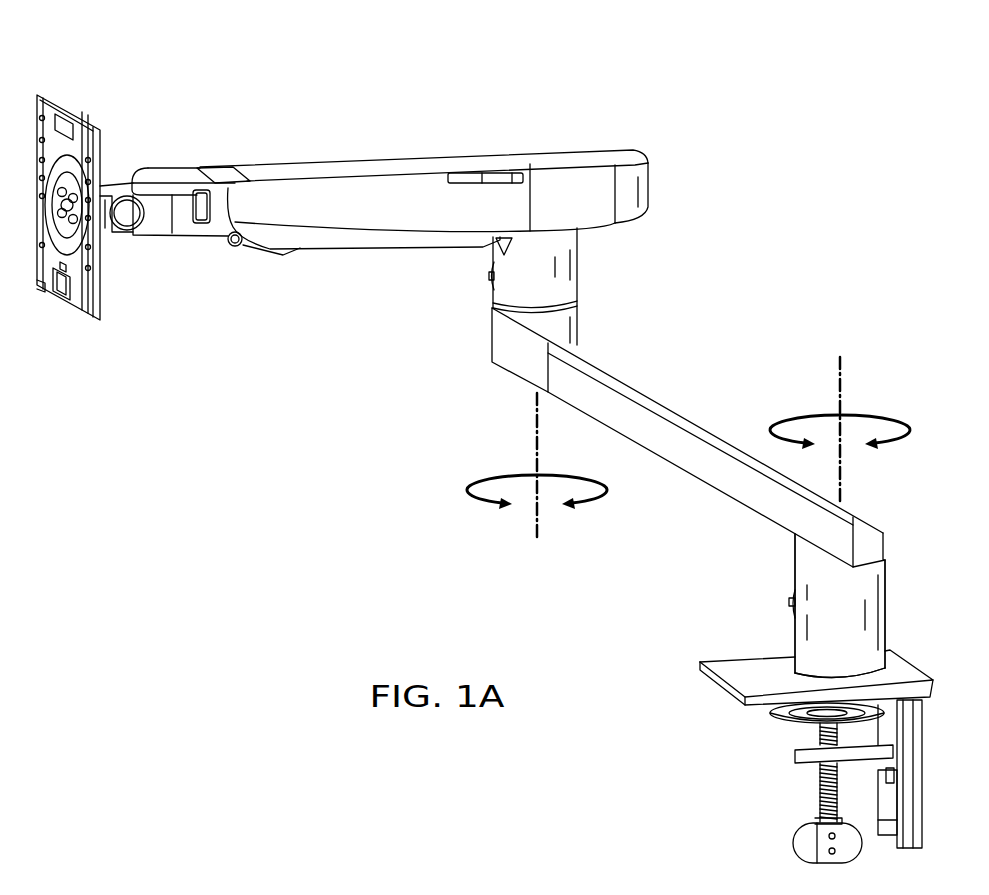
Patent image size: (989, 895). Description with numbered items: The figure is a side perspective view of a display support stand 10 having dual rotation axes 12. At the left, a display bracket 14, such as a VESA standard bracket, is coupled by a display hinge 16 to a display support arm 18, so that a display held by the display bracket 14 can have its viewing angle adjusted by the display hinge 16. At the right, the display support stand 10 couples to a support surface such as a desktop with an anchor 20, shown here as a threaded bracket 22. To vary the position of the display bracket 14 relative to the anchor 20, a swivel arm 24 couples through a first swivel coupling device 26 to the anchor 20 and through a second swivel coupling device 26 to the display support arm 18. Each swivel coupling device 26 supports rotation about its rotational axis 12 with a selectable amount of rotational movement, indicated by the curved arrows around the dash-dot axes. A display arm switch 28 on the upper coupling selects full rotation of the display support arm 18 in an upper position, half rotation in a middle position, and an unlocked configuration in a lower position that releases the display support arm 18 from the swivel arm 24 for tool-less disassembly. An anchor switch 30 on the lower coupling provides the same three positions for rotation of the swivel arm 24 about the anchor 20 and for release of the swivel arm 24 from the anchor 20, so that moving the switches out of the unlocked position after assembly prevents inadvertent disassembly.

The display support stand 10 is at (762, 168).
The rotational axis 12 is at (533, 525).
The display bracket 14 is at (67, 110).
The display hinge 16 is at (168, 177).
The display support arm 18 is at (403, 150).
The anchor 20 is at (895, 609).
The threaded bracket 22 is at (820, 797).
The swivel arm 24 is at (650, 462).
The swivel coupling device 26 is at (587, 259).
The display arm switch 28 is at (492, 277).
The anchor switch 30 is at (790, 602).